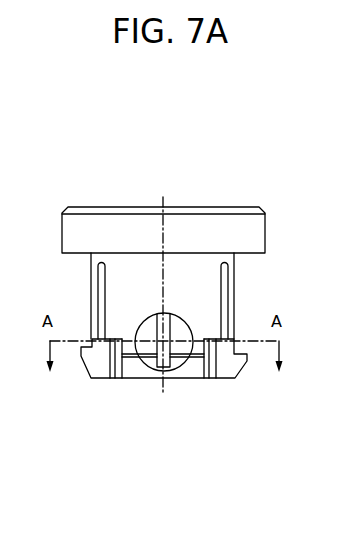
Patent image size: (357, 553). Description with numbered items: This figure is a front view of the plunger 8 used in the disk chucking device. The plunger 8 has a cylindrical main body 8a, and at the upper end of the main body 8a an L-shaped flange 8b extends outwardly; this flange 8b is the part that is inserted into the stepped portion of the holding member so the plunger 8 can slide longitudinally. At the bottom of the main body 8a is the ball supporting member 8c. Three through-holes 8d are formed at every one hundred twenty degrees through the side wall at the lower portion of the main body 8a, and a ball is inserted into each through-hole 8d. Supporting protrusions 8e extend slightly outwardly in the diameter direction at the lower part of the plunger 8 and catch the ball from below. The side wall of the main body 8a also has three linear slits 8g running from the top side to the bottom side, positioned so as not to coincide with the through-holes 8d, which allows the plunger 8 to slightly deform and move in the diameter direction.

The plunger 8 is at (232, 174).
The cylindrical main body 8a is at (202, 287).
The flange 8b is at (253, 233).
The ball supporting member 8c is at (147, 368).
The through-hole 8d is at (181, 356).
The supporting protrusion 8e is at (236, 362).
The slit 8g is at (103, 280).